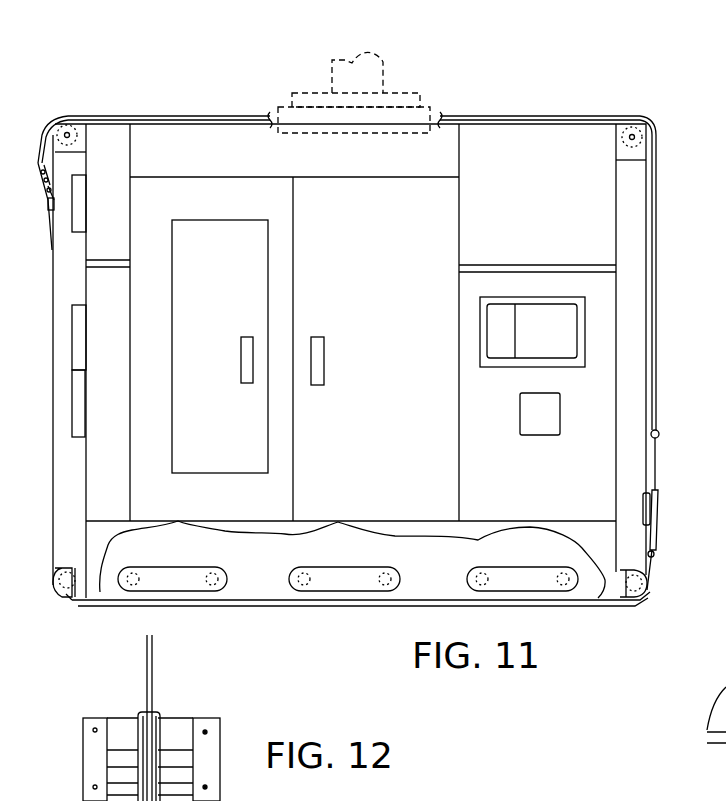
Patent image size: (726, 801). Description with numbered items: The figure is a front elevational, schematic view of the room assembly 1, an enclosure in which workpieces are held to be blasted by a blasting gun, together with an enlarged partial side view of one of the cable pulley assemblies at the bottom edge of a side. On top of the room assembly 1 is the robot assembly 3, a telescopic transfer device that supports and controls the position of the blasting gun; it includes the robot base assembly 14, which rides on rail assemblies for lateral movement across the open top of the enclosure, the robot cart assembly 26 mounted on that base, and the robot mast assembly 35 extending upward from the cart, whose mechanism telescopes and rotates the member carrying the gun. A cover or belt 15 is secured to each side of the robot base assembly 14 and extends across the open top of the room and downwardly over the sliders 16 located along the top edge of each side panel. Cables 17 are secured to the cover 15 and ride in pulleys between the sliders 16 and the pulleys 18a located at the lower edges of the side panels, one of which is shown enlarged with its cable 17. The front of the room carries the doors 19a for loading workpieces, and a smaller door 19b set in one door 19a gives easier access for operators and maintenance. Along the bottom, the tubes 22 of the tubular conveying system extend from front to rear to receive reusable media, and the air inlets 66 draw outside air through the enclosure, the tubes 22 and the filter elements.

In FIG. 11, the room assembly 1 is at (625, 330).
In FIG. 11, the robot assembly 3 is at (388, 58).
In FIG. 11, the robot base assembly 14 is at (420, 115).
In FIG. 11, the cover or belt 15 is at (118, 116).
In FIG. 11, the sliders 16 is at (70, 118).
In FIG. 11, the cables 17 is at (52, 250).
In FIG. 12, the cables 17 is at (152, 662).
In FIG. 11, the pulleys 18a is at (55, 592).
In FIG. 12, the pulleys 18a is at (143, 715).
In FIG. 11, the doors 19a is at (247, 210).
In FIG. 11, the smaller door 19b is at (232, 323).
In FIG. 11, the tubes 22 is at (215, 568).
In FIG. 11, the robot cart assembly 26 is at (405, 95).
In FIG. 11, the robot mast assembly 35 is at (384, 72).
In FIG. 11, the air inlets 66 is at (553, 318).